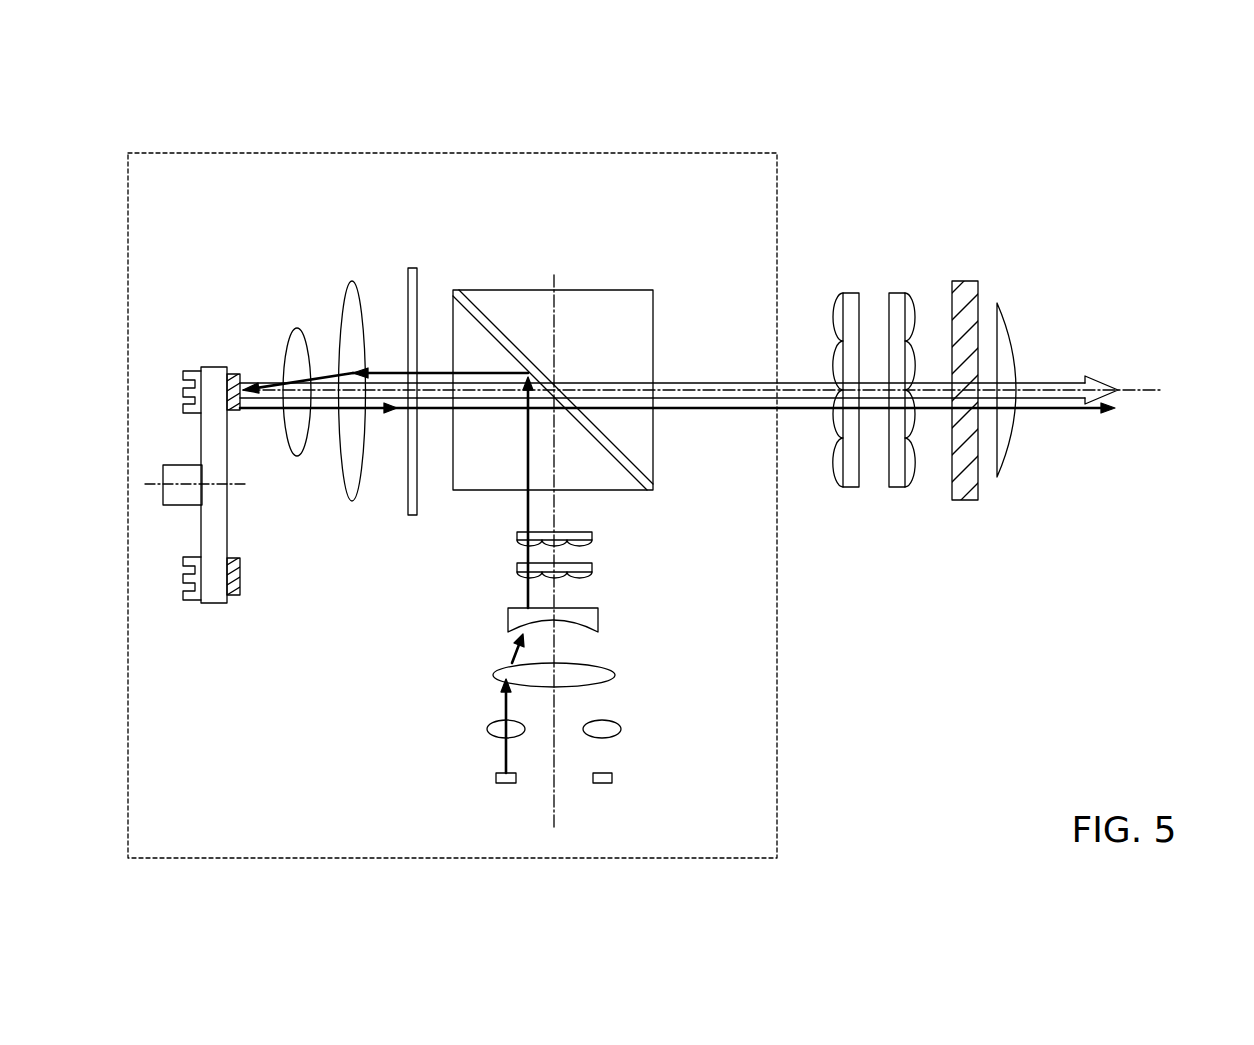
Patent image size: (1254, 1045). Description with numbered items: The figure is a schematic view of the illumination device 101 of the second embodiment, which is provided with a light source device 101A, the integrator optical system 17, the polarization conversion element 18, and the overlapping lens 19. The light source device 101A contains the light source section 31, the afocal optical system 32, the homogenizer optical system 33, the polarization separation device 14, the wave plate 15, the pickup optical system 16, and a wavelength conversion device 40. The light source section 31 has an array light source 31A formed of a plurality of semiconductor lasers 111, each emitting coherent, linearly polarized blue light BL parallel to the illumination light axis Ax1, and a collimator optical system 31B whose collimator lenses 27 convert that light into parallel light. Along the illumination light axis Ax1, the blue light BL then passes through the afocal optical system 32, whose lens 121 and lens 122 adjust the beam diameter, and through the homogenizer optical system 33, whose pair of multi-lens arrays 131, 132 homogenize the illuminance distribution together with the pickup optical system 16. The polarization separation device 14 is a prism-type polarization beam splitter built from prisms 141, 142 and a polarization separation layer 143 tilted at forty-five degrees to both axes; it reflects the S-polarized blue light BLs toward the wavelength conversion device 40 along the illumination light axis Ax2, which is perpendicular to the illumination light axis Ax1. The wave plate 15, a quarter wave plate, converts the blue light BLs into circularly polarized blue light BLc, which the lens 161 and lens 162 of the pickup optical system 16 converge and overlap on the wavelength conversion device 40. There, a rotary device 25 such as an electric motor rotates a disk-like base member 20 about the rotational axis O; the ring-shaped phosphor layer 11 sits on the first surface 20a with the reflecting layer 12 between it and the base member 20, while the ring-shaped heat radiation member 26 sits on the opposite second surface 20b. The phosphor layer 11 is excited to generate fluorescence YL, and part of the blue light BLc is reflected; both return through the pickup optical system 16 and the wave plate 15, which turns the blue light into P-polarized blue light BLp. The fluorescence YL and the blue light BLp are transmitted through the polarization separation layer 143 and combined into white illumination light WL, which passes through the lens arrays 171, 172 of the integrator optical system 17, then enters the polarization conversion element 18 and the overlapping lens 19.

The illumination device 101 is at (910, 124).
The light source device 101A is at (678, 151).
The phosphor layer 11 is at (236, 597).
The reflecting layer 12 is at (228, 604).
The polarization separation device 14 is at (564, 393).
The prism 141 is at (472, 482).
The prism 142 is at (613, 303).
The polarization separation layer 143 is at (515, 352).
The wave plate 15 is at (412, 267).
The pickup optical system 16 is at (301, 345).
The lens 161 is at (335, 365).
The lens 162 is at (298, 330).
The integrator optical system 17 is at (867, 329).
The lens array 171 is at (850, 292).
The lens array 172 is at (904, 348).
The polarization conversion element 18 is at (965, 290).
The overlapping lens 19 is at (1012, 318).
The base member 20 is at (210, 378).
The first surface 20a is at (232, 372).
The second surface 20b is at (188, 370).
The rotary device 25 is at (173, 503).
The heat radiation member 26 is at (195, 602).
The collimator lens 27 is at (605, 731).
The light source section 31 is at (591, 755).
The array light source 31A is at (627, 780).
The collimator optical system 31B is at (637, 733).
The afocal optical system 32 is at (608, 648).
The homogenizer optical system 33 is at (612, 556).
The wavelength conversion device 40 is at (223, 507).
The semiconductor laser 111 is at (567, 791).
The lens 121 is at (585, 675).
The lens 122 is at (598, 620).
The multi-lens array 131 is at (589, 579).
The multi-lens array 132 is at (592, 536).
The rotational axis O is at (241, 484).
The illumination light axis Ax1 is at (554, 815).
The illumination light axis Ax2 is at (1155, 389).
The blue light BL is at (522, 513).
The blue light BLs is at (482, 372).
The blue light BLp is at (432, 412).
The blue light BLc is at (392, 371).
The fluorescence YL is at (320, 402).
The illumination light WL is at (1181, 422).